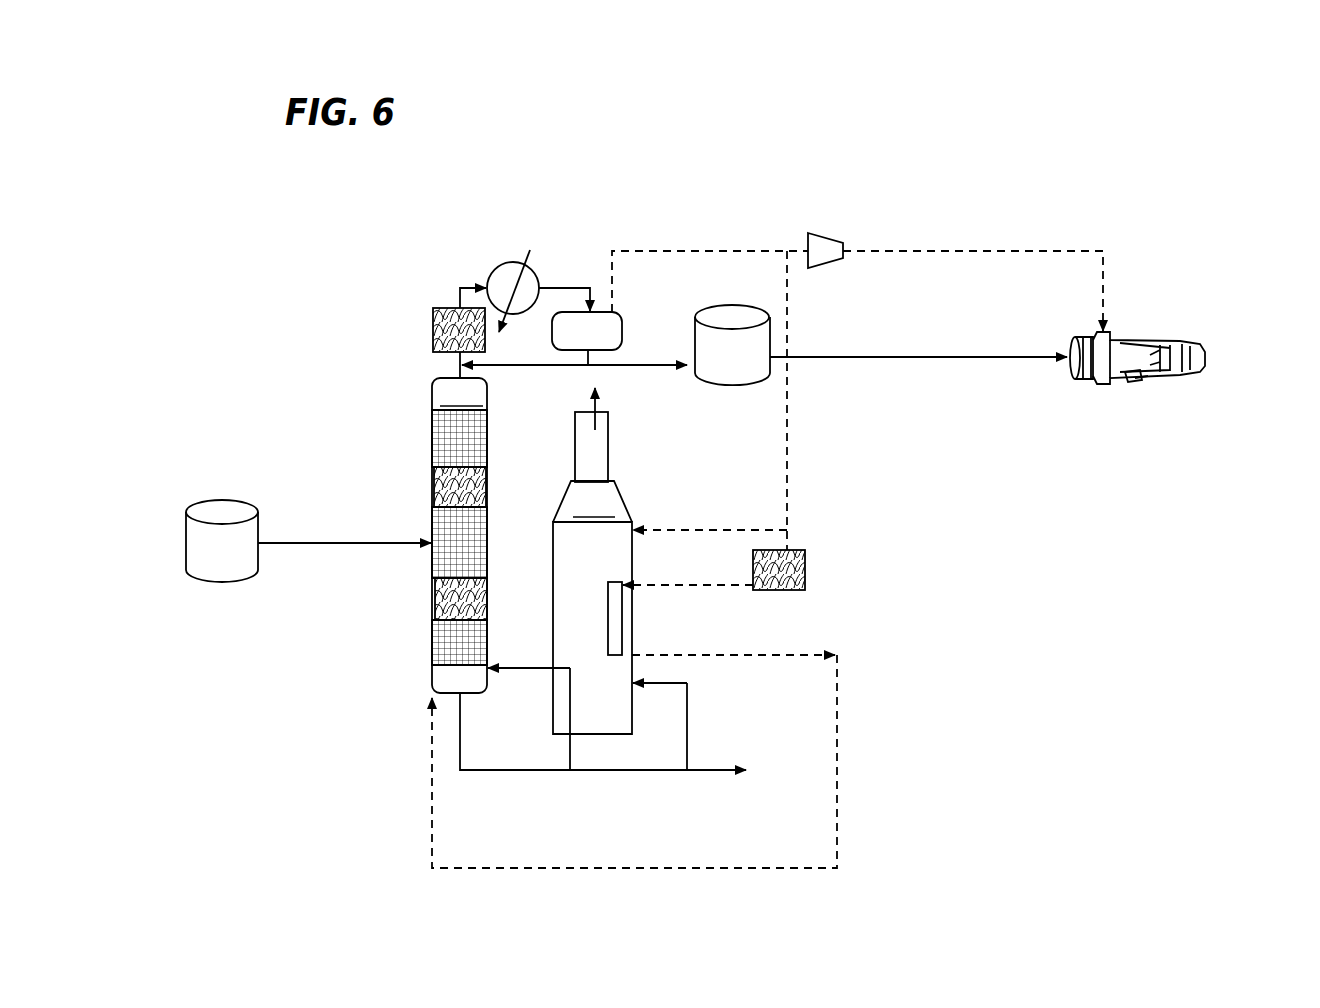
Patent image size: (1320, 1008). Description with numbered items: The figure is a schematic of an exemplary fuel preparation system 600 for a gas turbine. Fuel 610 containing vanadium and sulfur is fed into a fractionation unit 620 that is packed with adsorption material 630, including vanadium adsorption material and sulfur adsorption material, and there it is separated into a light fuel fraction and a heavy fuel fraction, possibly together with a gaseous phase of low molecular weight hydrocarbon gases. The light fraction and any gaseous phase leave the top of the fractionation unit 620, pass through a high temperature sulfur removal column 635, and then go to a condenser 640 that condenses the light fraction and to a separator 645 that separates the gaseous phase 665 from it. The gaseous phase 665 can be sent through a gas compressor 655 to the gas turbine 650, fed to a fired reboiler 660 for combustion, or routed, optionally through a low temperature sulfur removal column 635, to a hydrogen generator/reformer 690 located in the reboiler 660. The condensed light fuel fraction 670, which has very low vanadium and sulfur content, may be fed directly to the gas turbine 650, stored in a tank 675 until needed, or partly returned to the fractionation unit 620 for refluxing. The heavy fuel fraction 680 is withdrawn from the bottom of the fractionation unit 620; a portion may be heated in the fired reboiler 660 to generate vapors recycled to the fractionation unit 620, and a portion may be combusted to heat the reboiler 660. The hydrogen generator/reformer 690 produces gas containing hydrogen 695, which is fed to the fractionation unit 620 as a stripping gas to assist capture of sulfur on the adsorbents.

The fuel preparation system 600 is at (828, 186).
The fuel 610 is at (248, 582).
The fractionation unit 620 is at (501, 574).
The adsorption material 630 is at (431, 433).
The sulfur removal column 635 is at (428, 333).
The condenser 640 is at (538, 269).
The separator 645 is at (624, 337).
The gas turbine 650 is at (1205, 343).
The gas compressor 655 is at (828, 272).
The fired reboiler 660 is at (620, 579).
The gaseous phase 665 is at (739, 254).
The light fuel fraction 670 is at (567, 370).
The tank 675 is at (772, 334).
The heavy fuel fraction 680 is at (470, 753).
The hydrogen generator/reformer 690 is at (623, 618).
The gas containing hydrogen 695 is at (427, 751).